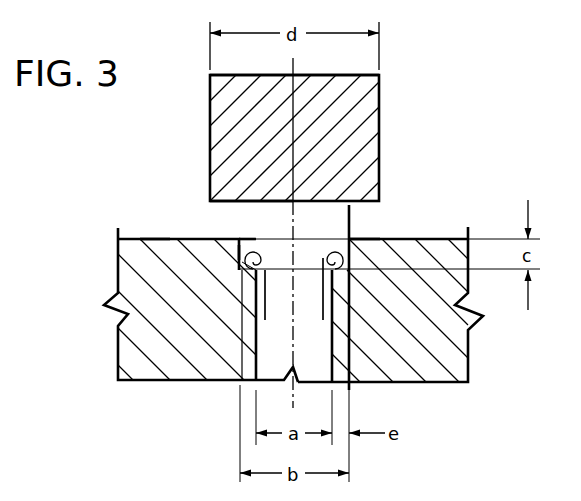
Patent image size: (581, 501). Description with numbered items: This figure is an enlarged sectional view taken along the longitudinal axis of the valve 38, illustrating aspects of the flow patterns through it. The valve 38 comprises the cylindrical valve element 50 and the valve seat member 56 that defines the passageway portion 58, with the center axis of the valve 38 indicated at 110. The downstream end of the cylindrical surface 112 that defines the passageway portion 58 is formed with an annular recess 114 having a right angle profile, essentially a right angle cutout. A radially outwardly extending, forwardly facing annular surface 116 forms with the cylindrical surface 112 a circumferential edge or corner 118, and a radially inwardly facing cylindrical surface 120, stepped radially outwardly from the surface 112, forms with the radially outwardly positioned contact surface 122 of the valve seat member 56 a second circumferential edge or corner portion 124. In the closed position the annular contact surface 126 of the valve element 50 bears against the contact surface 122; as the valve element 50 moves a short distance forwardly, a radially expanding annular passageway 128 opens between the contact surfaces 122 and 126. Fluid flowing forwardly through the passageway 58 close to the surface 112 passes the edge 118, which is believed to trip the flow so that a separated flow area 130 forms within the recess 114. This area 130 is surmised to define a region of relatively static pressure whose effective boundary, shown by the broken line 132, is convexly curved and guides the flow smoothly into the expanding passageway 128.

The valve 38 is at (394, 93).
The valve element 50 is at (378, 126).
The valve seat member 56 is at (147, 336).
The passageway portion 58 is at (312, 362).
The center axis 110 is at (292, 108).
The cylindrical surface 112 is at (322, 347).
The annular recess 114 is at (240, 247).
The annular surface 116 is at (245, 262).
The circumferential edge 118 is at (266, 261).
The cylindrical surface 120 is at (252, 240).
The contact surface 122 is at (155, 239).
The corner portion 124 is at (349, 240).
The annular contact surface 126 is at (358, 203).
The annular passageway 128 is at (372, 228).
The separated flow area 130 is at (238, 255).
The boundary surface area 132 is at (335, 245).